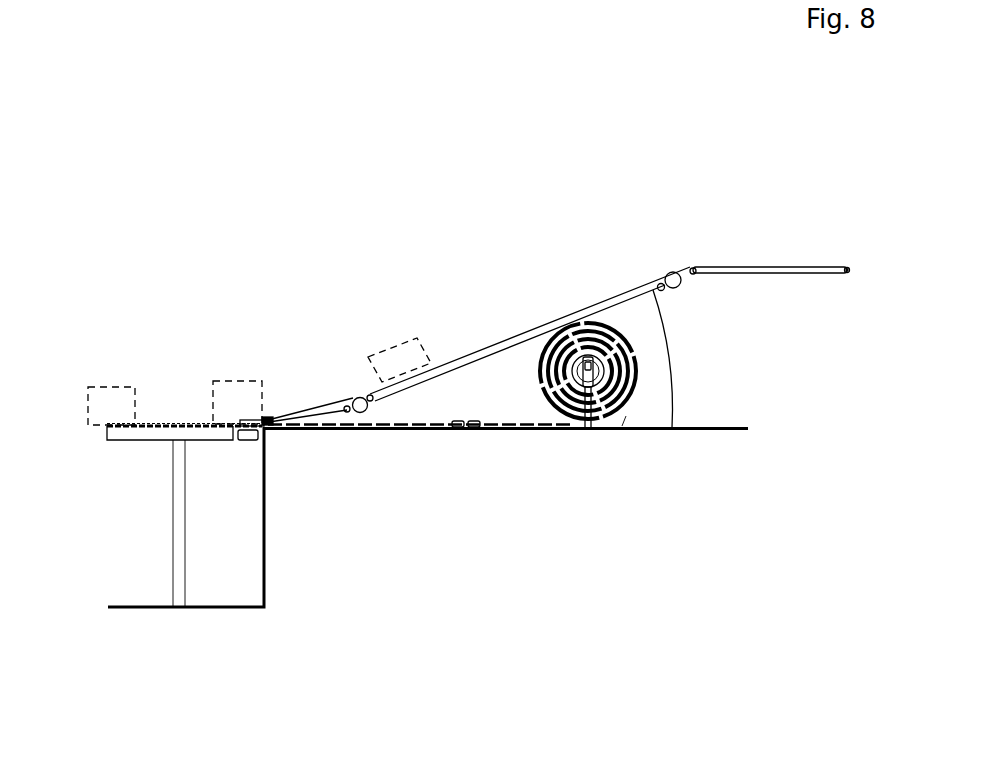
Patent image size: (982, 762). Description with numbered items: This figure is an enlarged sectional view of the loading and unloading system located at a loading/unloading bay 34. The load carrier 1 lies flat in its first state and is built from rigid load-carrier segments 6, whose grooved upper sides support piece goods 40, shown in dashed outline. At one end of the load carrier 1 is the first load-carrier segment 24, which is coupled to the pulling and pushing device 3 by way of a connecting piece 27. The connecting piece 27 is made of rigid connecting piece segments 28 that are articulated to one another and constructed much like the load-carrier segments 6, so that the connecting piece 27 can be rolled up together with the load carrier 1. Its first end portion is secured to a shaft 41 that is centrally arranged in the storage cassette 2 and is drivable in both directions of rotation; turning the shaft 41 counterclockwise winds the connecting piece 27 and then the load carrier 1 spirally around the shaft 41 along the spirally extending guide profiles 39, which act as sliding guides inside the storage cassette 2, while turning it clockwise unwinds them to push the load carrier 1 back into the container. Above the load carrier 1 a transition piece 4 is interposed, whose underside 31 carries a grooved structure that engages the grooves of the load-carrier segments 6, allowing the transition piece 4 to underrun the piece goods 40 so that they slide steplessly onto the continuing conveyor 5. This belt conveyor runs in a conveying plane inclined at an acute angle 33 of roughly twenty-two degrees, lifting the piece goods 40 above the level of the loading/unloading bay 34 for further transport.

The load carrier 1 is at (160, 424).
The storage cassette 2 is at (568, 268).
The pulling and pushing device 3 is at (574, 294).
The transition piece 4 is at (320, 326).
The continuing conveyor 5 is at (530, 303).
The load-carrier segments 6 is at (184, 330).
The first load-carrier segment 24 is at (223, 329).
The connecting piece 27 is at (463, 421).
The connecting piece segments 28 is at (462, 489).
The underside 31 is at (241, 518).
The acute angle 33 is at (526, 399).
The loading/unloading bay 34 is at (779, 347).
The guide profiles 39 is at (650, 503).
The piece goods 40 is at (240, 287).
The shaft 41 is at (710, 294).